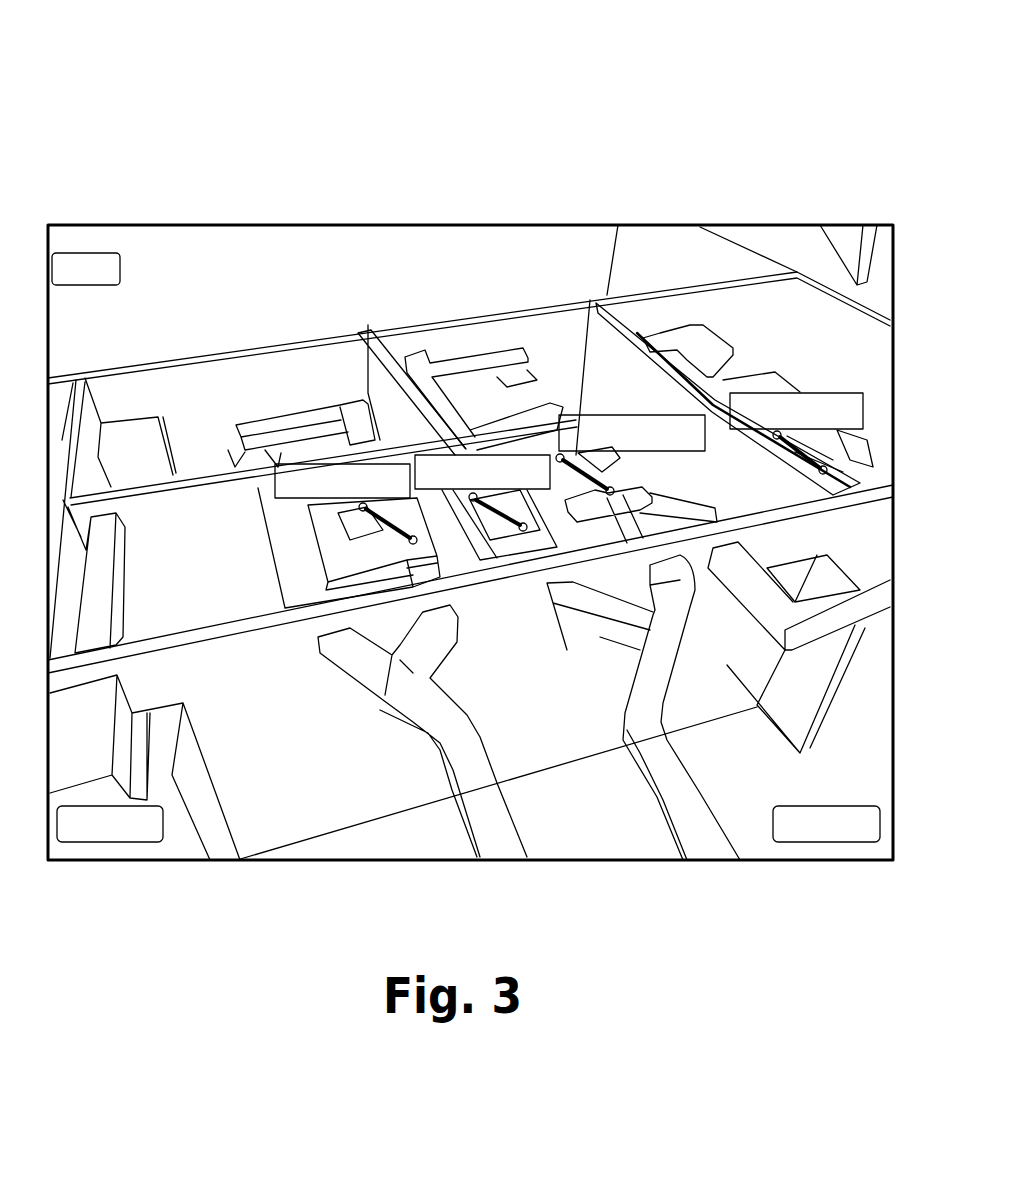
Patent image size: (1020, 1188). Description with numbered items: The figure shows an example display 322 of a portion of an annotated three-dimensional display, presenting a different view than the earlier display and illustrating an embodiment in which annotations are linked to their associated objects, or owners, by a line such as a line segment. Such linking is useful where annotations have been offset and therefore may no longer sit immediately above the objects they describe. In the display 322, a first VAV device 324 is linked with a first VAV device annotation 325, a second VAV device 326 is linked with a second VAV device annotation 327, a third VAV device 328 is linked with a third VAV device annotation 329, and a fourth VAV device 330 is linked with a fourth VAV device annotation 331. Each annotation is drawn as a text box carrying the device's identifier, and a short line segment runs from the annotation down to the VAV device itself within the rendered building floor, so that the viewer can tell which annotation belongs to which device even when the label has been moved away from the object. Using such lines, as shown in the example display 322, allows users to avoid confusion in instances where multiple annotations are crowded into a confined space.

The display 322 is at (480, 88).
The first VAV device 324 is at (394, 566).
The first VAV device annotation 325 is at (342, 458).
The second VAV device 326 is at (502, 553).
The second VAV device annotation 327 is at (468, 446).
The third VAV device 328 is at (575, 532).
The third VAV device annotation 329 is at (603, 413).
The fourth VAV device 330 is at (855, 484).
The fourth VAV device annotation 331 is at (768, 383).